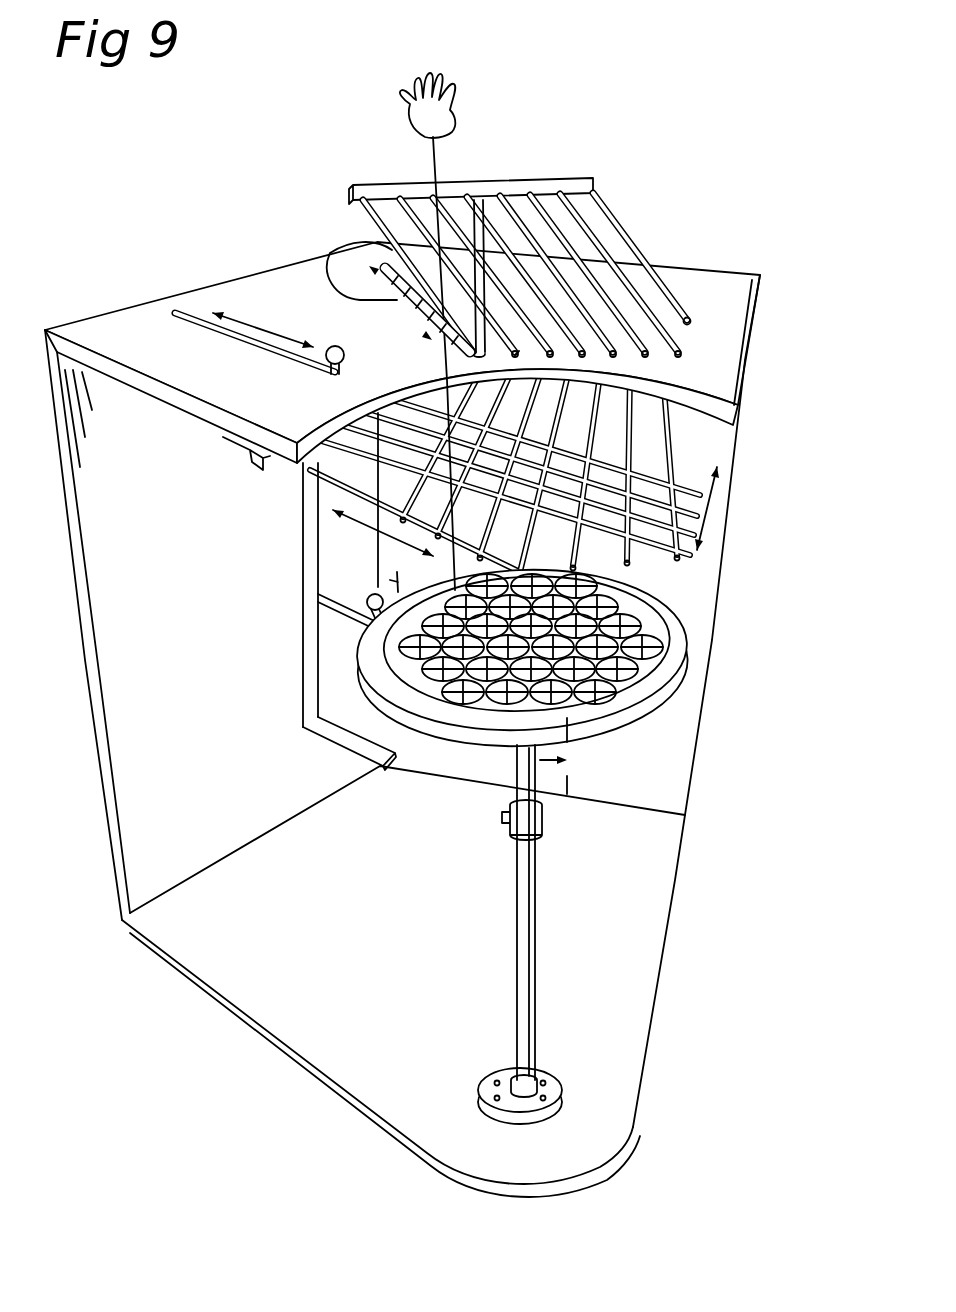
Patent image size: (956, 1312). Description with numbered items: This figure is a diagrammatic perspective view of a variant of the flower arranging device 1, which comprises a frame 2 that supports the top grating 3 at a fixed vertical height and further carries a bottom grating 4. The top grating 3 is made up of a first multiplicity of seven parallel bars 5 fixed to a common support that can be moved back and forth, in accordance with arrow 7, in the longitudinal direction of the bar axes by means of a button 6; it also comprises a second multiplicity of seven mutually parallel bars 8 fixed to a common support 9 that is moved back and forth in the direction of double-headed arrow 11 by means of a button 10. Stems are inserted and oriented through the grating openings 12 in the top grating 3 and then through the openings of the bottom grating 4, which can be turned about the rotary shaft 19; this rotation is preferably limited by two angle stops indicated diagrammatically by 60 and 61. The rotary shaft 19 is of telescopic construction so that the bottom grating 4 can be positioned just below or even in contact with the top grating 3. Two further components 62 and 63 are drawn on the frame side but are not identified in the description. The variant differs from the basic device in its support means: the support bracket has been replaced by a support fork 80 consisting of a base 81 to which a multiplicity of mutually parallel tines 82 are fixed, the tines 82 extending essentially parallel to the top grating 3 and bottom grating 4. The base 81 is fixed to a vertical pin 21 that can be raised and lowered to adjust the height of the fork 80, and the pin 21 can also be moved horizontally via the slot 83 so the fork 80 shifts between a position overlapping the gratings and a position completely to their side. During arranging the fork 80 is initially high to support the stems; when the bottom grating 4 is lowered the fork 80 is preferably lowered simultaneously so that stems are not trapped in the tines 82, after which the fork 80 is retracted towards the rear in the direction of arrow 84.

The flower arranging device 1 is at (688, 123).
The frame 2 is at (122, 757).
The top grating 3 is at (716, 447).
The bottom grating 4 is at (580, 661).
The bars 5 is at (323, 543).
The button 6 is at (616, 300).
The arrow 7 is at (620, 368).
The bars 8 is at (700, 580).
The common support 9 is at (243, 466).
The button 10 is at (346, 352).
The double-headed arrow 11 is at (265, 327).
The grating openings 12 is at (700, 606).
The rotary shaft 19 is at (537, 925).
The vertical pin 21 is at (478, 238).
The angle stop 60 is at (393, 581).
The angle stop 61 is at (569, 778).
The arm 62 is at (316, 598).
The bracket 63 is at (372, 756).
The support fork 80 is at (669, 259).
The base 81 is at (383, 185).
The tines 82 is at (690, 302).
The slot 83 is at (372, 264).
The arrow 84 is at (370, 300).